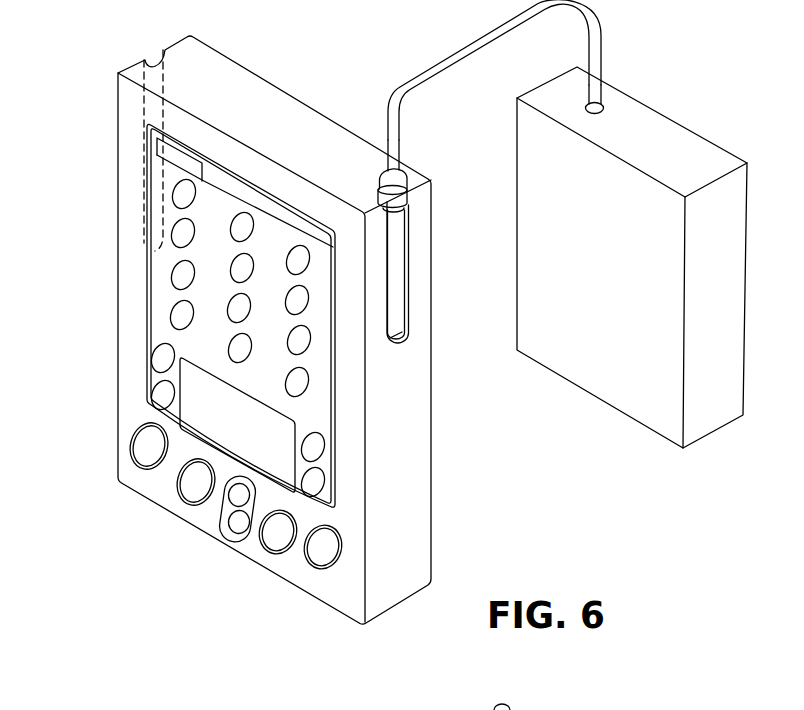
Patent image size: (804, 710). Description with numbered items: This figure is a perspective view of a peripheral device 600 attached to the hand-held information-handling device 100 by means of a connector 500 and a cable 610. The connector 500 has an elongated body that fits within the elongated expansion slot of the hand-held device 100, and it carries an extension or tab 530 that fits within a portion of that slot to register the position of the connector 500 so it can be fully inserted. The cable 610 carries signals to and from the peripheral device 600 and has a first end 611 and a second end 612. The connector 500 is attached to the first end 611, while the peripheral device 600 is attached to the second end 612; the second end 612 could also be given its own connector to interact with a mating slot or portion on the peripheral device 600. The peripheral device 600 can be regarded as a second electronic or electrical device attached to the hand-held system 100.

The hand-held information-handling device 100 is at (117, 288).
The connector 500 is at (397, 283).
The tab 530 is at (397, 217).
The peripheral device 600 is at (573, 377).
The cable 610 is at (476, 39).
The first end 611 is at (398, 162).
The second end 612 is at (599, 106).